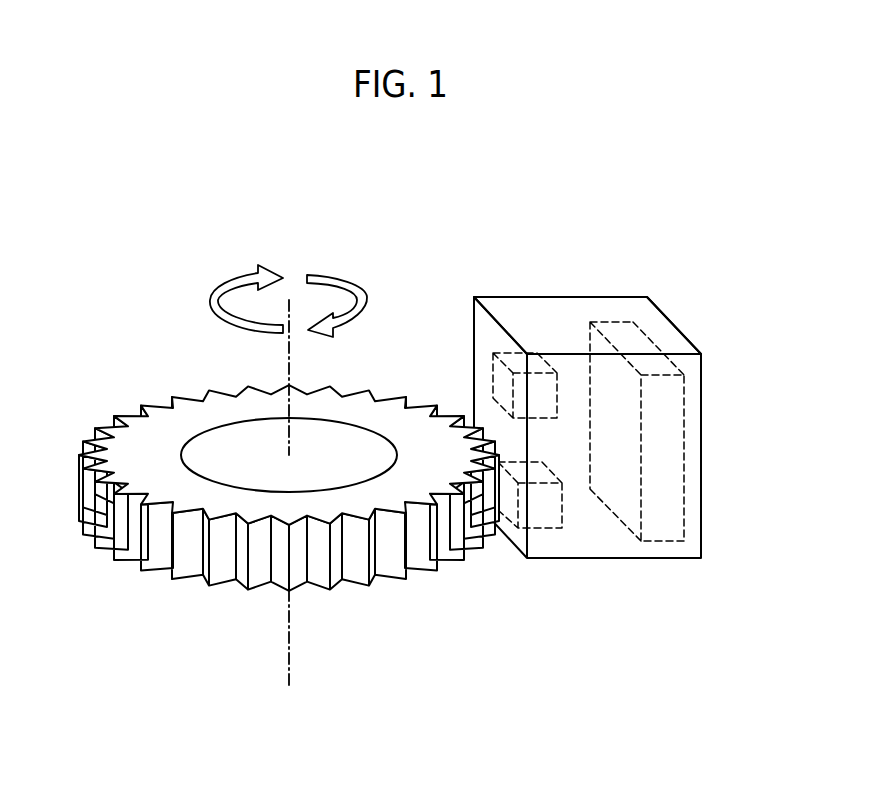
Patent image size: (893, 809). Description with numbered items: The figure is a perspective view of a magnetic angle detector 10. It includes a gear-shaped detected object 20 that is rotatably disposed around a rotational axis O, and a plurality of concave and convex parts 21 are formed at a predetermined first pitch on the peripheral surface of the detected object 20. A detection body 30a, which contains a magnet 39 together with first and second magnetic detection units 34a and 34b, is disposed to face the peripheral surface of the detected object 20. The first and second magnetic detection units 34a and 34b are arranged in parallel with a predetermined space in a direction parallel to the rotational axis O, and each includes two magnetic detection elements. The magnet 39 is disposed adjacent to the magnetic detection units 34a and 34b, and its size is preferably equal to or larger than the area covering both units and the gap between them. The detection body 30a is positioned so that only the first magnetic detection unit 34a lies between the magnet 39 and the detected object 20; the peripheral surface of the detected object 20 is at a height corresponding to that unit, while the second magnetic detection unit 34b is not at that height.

The magnetic angle detector 10 is at (617, 382).
The detected object 20 is at (289, 487).
The concave and convex parts 21 is at (198, 562).
The detection body 30a is at (673, 320).
The first magnetic detection unit 34a is at (548, 508).
The second magnetic detection unit 34b is at (543, 383).
The magnet 39 is at (670, 455).
The rotational axis O is at (300, 305).